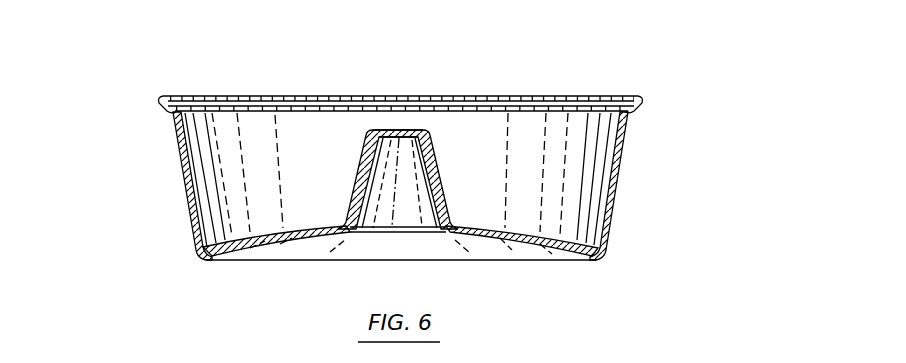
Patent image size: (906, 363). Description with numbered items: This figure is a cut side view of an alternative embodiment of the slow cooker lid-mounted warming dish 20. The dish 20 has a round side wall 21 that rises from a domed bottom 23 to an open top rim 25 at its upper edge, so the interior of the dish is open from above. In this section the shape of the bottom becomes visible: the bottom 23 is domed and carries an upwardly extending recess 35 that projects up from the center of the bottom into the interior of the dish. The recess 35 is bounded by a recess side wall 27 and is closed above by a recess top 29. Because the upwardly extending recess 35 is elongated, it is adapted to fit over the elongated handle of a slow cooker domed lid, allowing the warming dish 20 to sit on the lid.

The slow cooker lid-mounted warming dish 20 is at (482, 61).
The round side wall 21 is at (184, 172).
The domed bottom 23 is at (530, 245).
The open top rim 25 is at (603, 96).
The recess side wall 27 is at (367, 177).
The recess top 29 is at (395, 128).
The upwardly extending recess 35 is at (450, 184).